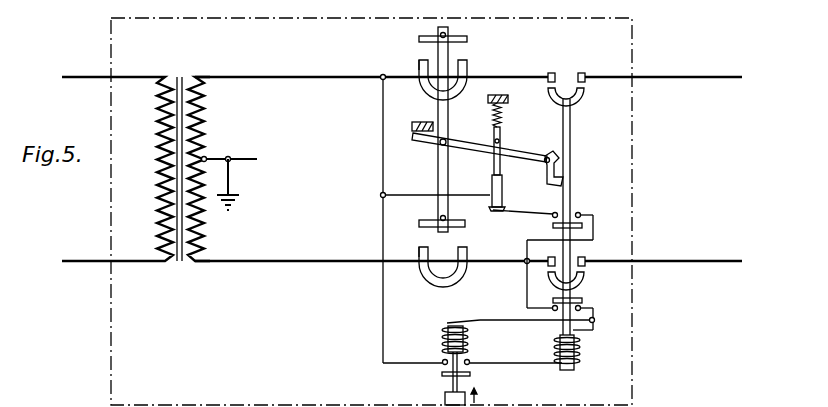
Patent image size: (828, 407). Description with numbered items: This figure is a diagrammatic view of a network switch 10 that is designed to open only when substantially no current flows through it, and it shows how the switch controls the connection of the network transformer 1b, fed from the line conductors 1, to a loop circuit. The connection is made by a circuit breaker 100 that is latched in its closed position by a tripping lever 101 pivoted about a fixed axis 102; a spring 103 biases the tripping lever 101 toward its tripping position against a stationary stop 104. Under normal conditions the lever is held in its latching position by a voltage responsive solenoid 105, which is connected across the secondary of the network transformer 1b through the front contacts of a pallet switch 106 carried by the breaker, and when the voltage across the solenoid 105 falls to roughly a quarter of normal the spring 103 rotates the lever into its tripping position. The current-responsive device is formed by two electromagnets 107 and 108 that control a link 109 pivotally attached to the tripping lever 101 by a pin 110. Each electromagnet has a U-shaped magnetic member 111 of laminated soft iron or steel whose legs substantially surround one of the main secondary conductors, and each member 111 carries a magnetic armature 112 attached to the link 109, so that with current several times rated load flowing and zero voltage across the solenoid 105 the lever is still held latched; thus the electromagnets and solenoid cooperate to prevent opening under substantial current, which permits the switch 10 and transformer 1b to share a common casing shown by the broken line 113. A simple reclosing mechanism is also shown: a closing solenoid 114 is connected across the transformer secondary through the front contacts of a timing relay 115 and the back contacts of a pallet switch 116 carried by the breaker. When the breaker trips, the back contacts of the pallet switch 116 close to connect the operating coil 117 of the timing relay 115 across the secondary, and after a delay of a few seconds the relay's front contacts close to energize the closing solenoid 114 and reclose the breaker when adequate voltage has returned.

The supply line conductors 1 is at (87, 76).
The network transformer 1b is at (193, 69).
The network switch 10 is at (500, 296).
The circuit breaker 100 is at (570, 134).
The tripping lever 101 is at (536, 154).
The fixed axis 102 is at (547, 168).
The spring 103 is at (508, 110).
The stationary stop 104 is at (420, 120).
The voltage responsive solenoid 105 is at (503, 189).
The pallet switch 106 is at (583, 224).
The electromagnet 107 is at (419, 62).
The electromagnet 108 is at (420, 247).
The link 109 is at (448, 171).
The pin 110 is at (439, 146).
The U-shaped magnetic member 111 is at (467, 67).
The magnetic armature 112 is at (469, 39).
The broken line 113 is at (632, 45).
The closing solenoid 114 is at (575, 356).
The timing relay 115 is at (505, 390).
The pallet switch 116 is at (577, 298).
The operating coil 117 is at (448, 340).